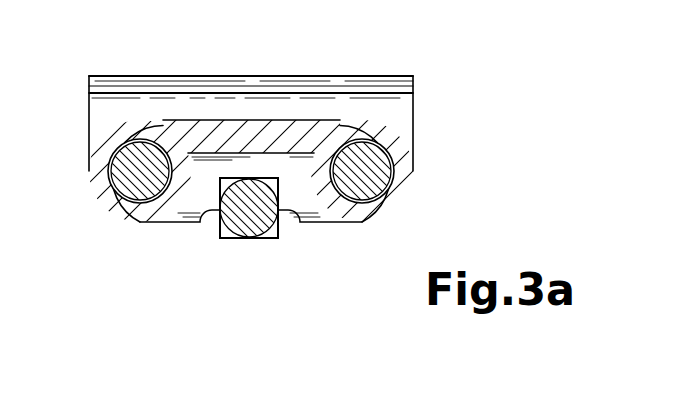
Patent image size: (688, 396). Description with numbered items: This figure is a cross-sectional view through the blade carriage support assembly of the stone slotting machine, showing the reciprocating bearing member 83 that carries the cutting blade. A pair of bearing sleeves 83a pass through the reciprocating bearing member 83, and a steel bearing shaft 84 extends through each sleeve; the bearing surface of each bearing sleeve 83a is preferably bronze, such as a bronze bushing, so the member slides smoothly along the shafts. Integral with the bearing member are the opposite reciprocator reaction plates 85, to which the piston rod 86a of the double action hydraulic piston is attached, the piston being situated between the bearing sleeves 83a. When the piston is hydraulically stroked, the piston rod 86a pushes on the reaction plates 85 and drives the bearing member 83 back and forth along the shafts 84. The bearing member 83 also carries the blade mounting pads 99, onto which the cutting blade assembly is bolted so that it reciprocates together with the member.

The blade mounting pad 99 is at (375, 76).
The reciprocating bearing member 83 is at (406, 178).
The bearing sleeve 83a is at (100, 201).
The steel bearing shaft 84 is at (114, 156).
The reciprocator reaction plate 85 is at (296, 204).
The piston rod 86a is at (213, 209).